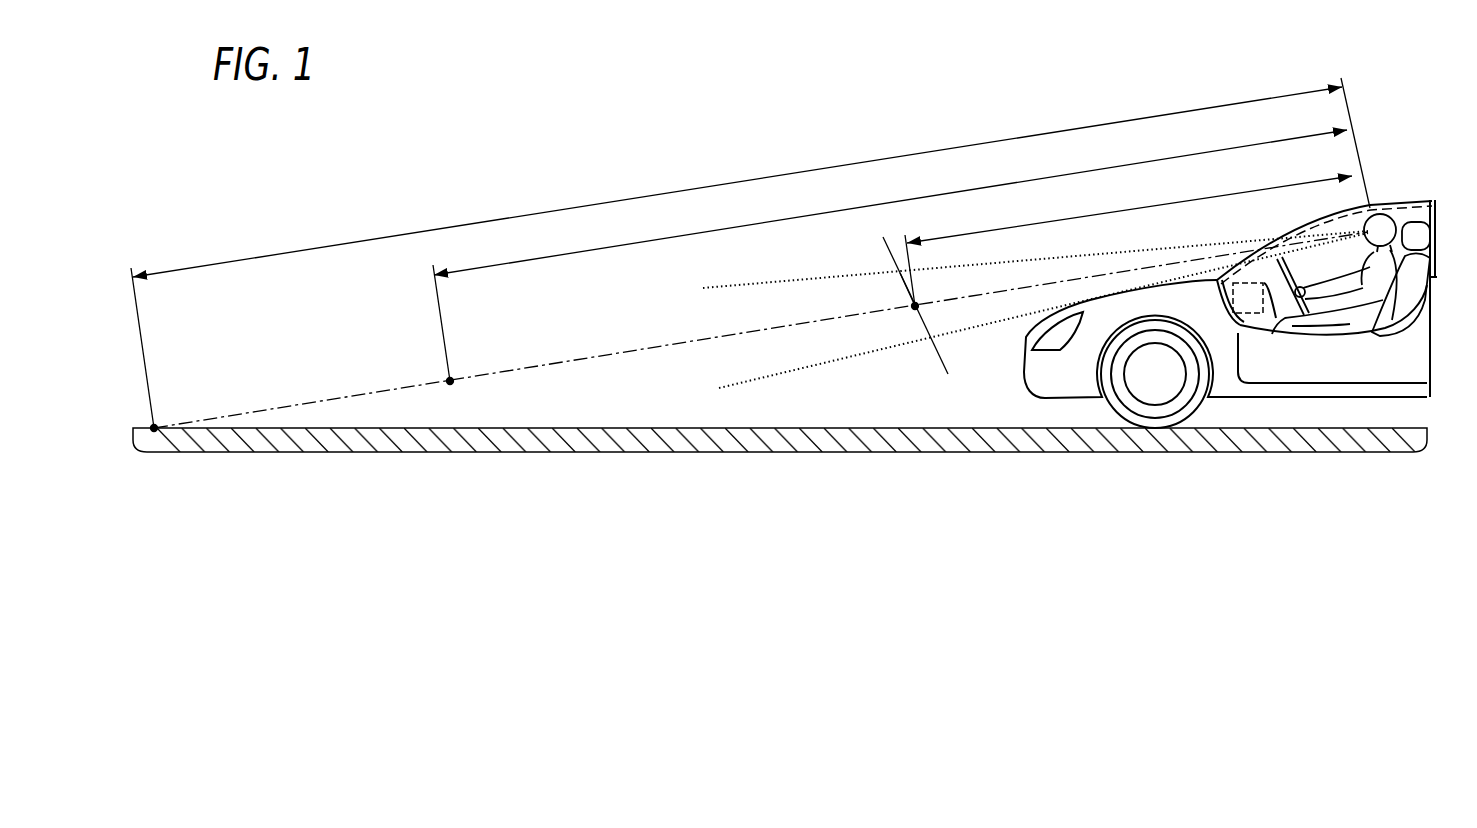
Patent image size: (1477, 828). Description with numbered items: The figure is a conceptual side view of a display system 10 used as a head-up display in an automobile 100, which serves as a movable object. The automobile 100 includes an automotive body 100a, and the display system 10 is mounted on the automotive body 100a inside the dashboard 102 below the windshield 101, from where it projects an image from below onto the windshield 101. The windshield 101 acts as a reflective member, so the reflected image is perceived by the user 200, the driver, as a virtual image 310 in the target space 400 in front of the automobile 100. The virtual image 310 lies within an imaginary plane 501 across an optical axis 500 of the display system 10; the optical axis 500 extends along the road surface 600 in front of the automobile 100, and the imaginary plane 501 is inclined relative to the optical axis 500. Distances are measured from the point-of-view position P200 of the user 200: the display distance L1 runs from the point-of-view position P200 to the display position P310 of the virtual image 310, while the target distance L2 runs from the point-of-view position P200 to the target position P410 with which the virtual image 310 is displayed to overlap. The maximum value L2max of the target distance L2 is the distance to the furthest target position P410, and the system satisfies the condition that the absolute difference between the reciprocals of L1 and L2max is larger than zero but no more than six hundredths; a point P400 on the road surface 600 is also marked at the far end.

The display system 10 is at (1222, 302).
The automobile 100 is at (1230, 320).
The automotive body 100a is at (1330, 368).
The windshield 101 is at (1307, 224).
The dashboard 102 is at (1271, 330).
The user 200 is at (1377, 284).
The point-of-view position P200 is at (1370, 207).
The virtual image 310 is at (912, 302).
The display position P310 is at (913, 308).
The target space 400 is at (753, 284).
The gaze point on road surface P400 is at (184, 405).
The target position P410 is at (480, 360).
The optical axis 500 is at (632, 351).
The imaginary plane 501 is at (887, 301).
The road surface 600 is at (652, 427).
The display distance L1 is at (1129, 208).
The target distance L2 is at (890, 202).
The maximum value of target distance L2max is at (737, 182).